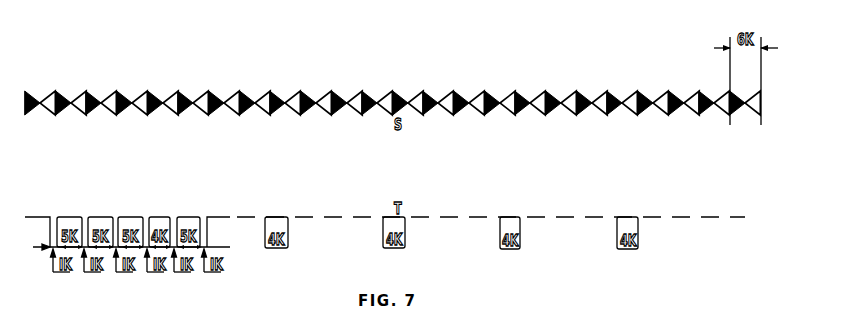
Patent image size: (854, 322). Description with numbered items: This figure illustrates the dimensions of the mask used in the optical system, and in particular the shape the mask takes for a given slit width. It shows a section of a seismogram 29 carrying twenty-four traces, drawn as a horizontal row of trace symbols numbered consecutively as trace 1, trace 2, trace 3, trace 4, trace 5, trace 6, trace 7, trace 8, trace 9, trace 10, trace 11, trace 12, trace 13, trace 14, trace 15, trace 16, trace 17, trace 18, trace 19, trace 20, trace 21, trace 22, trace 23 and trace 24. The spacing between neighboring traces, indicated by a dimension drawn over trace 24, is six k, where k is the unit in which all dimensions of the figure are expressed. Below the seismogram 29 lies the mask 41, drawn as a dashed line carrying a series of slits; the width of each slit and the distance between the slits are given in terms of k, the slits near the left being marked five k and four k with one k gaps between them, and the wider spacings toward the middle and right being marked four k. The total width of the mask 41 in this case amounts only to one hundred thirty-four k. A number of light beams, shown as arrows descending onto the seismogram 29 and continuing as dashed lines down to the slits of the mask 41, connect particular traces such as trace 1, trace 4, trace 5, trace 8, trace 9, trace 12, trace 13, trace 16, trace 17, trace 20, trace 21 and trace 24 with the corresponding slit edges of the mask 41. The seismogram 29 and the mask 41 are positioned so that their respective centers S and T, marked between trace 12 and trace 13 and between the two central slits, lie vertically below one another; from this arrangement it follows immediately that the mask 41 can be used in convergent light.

The trace 1 is at (53, 217).
The trace 2 is at (71, 98).
The trace 3 is at (101, 98).
The trace 4 is at (147, 217).
The trace 5 is at (172, 217).
The trace 6 is at (193, 98).
The trace 7 is at (224, 98).
The trace 8 is at (265, 217).
The trace 9 is at (288, 217).
The trace 10 is at (316, 98).
The trace 11 is at (347, 98).
The trace 12 is at (383, 217).
The trace 13 is at (405, 217).
The trace 14 is at (438, 98).
The trace 15 is at (469, 98).
The trace 16 is at (500, 217).
The trace 17 is at (520, 217).
The trace 18 is at (561, 98).
The trace 19 is at (592, 98).
The trace 20 is at (617, 217).
The trace 21 is at (638, 217).
The trace 22 is at (684, 98).
The trace 23 is at (714, 98).
The trace 24 is at (733, 217).
The seismogram 29 is at (414, 135).
The mask 41 is at (745, 217).